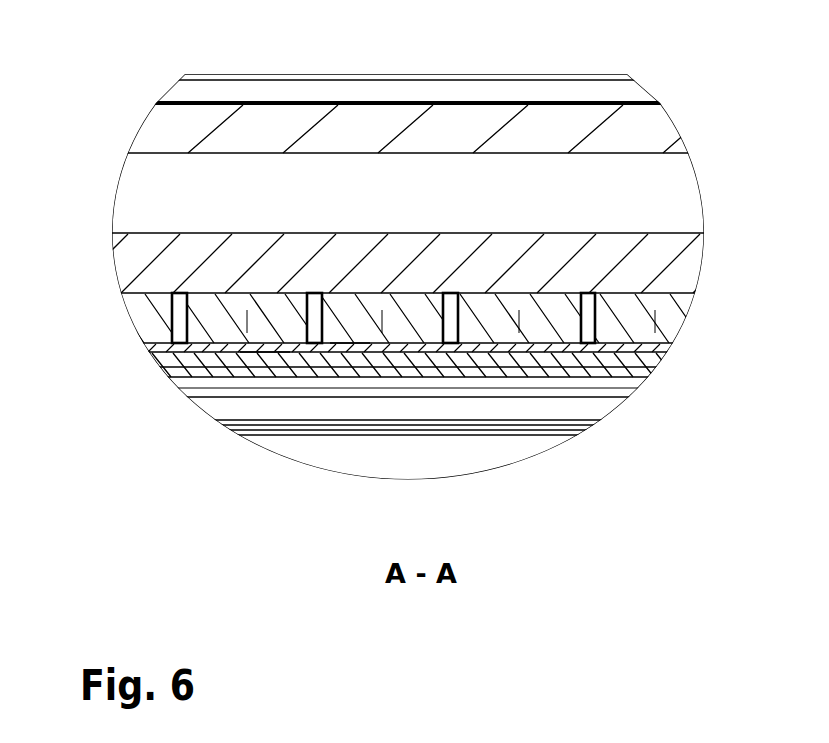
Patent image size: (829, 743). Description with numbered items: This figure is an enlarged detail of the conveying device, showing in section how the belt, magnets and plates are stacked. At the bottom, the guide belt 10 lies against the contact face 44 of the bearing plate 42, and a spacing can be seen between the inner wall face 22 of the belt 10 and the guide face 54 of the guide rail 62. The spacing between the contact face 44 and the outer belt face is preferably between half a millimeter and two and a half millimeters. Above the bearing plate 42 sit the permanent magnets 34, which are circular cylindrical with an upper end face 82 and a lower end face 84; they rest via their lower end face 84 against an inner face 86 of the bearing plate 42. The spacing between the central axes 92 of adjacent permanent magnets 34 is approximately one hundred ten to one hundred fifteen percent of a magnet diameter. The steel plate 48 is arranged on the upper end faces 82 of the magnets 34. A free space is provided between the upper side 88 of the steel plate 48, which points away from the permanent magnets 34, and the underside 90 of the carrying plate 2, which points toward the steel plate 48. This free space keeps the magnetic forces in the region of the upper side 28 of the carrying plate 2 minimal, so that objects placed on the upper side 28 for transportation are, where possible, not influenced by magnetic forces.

The carrying plate 2 is at (652, 127).
The upper side of the carrying plate 28 is at (203, 102).
The underside of the carrying plate 90 is at (537, 152).
The upper side of the steel plate 88 is at (434, 233).
The steel plate 48 is at (345, 248).
The upper end face 82 is at (269, 293).
The permanent magnets 34 is at (207, 308).
The central axes of the permanent magnets 92 is at (247, 332).
The bearing plate 42 is at (646, 343).
The lower end face 84 is at (260, 330).
The inner face of the bearing plate 86 is at (340, 335).
The guide belt 10 is at (660, 360).
The contact face of the bearing plate 44 is at (168, 375).
The inner wall face of the belt 22 is at (607, 378).
The guide face of the guide rail 54 is at (503, 388).
The guide rail 62 is at (568, 407).